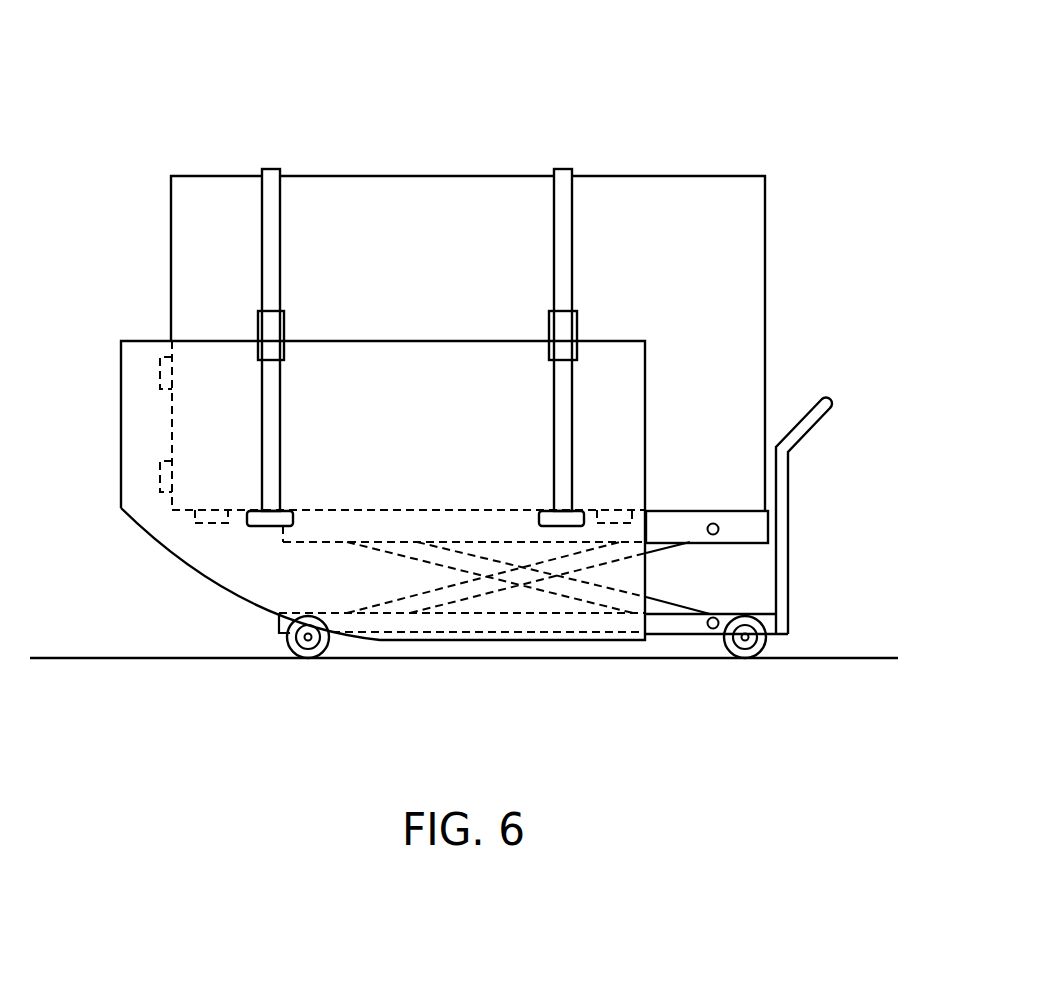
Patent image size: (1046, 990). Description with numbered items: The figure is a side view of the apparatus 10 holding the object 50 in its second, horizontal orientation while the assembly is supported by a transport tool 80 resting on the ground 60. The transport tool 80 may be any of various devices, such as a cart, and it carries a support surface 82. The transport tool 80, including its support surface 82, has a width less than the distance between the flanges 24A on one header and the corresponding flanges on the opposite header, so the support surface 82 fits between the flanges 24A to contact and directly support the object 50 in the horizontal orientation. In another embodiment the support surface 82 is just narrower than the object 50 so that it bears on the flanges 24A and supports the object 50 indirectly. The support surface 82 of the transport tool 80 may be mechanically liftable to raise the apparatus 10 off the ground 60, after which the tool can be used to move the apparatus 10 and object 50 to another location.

The apparatus 10 is at (152, 568).
The second flanges 24A is at (210, 525).
The object 50 is at (690, 176).
The ground 60 is at (822, 658).
The transport tool 80 is at (793, 525).
The support surface 82 is at (738, 511).